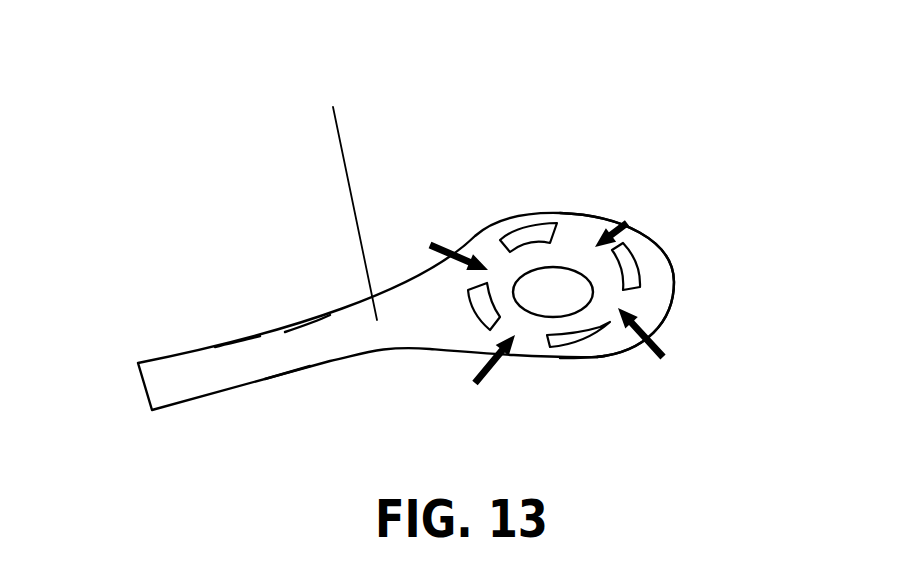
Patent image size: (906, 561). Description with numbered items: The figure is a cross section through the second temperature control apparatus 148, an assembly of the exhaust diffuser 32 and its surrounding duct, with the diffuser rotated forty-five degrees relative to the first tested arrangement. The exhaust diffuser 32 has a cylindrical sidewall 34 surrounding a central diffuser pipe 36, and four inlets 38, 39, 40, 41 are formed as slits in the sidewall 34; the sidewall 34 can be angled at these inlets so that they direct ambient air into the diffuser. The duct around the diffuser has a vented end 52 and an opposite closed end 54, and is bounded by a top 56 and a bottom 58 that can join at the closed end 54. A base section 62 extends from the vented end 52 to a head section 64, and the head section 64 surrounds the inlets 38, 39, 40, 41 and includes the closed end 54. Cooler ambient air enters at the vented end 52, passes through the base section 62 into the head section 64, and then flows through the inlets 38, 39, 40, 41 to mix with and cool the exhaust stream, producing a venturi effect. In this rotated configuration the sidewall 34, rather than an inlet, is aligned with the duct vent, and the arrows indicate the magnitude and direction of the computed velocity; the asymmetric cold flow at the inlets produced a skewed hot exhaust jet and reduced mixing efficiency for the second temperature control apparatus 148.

The second temperature control apparatus 148 is at (333, 107).
The exhaust diffuser 32 is at (525, 237).
The sidewall 34 is at (472, 318).
The diffuser pipe 36 is at (593, 282).
The inlet 38 is at (537, 345).
The inlet 39 is at (470, 237).
The inlet 40 is at (578, 233).
The inlet 41 is at (642, 300).
The vented end 52 is at (143, 393).
The closed end 54 is at (673, 272).
The top 56 is at (305, 330).
The bottom 58 is at (287, 373).
The base section 62 is at (238, 342).
The head section 64 is at (593, 353).